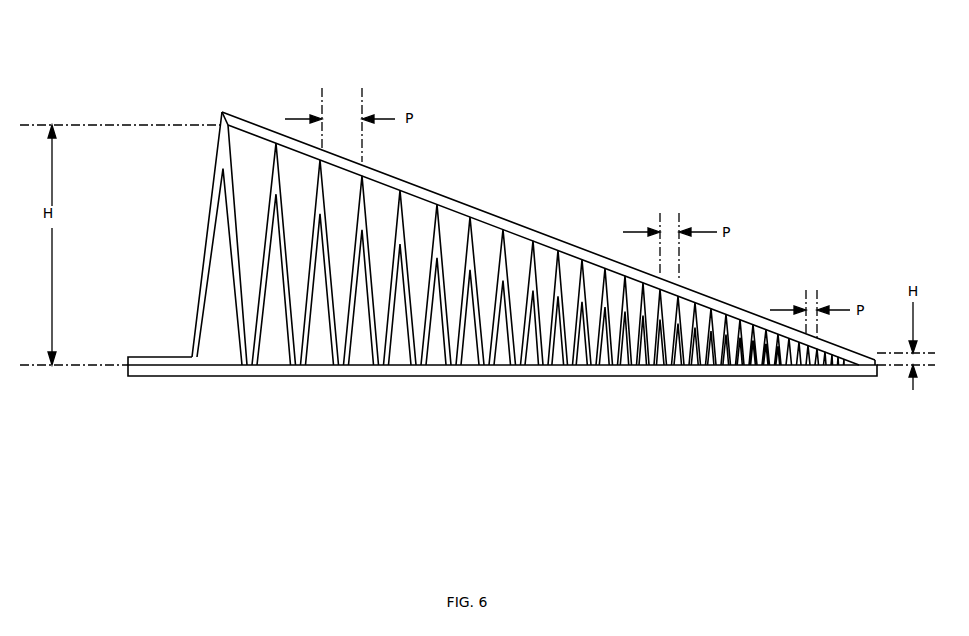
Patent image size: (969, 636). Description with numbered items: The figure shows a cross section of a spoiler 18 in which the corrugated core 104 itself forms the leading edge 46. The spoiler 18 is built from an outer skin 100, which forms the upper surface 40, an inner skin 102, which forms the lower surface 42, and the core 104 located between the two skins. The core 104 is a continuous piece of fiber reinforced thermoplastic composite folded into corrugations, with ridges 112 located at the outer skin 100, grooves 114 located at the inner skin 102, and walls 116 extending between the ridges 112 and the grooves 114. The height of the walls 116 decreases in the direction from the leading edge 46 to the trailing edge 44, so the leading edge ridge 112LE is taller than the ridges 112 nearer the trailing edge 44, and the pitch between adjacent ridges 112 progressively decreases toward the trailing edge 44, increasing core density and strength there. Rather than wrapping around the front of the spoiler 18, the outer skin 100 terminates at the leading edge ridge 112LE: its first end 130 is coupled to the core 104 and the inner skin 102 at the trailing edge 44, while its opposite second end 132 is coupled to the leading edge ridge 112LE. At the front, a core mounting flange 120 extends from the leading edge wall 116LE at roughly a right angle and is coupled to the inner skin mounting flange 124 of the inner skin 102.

The spoiler 18 is at (650, 105).
The upper surface 40 is at (602, 256).
The lower surface 42 is at (463, 376).
The trailing edge 44 is at (868, 372).
The leading edge 46 is at (217, 187).
The outer skin 100 is at (450, 198).
The inner skin 102 is at (615, 372).
The core 104 is at (216, 145).
The ridges 112 is at (515, 223).
The leading edge ridge 112LE is at (227, 143).
The grooves 114 is at (298, 366).
The walls 116 is at (433, 240).
The leading edge wall 116LE is at (203, 313).
The core mounting flange 120 is at (140, 360).
The inner skin mounting flange 124 is at (172, 376).
The first end 130 is at (876, 361).
The second end 132 is at (222, 118).